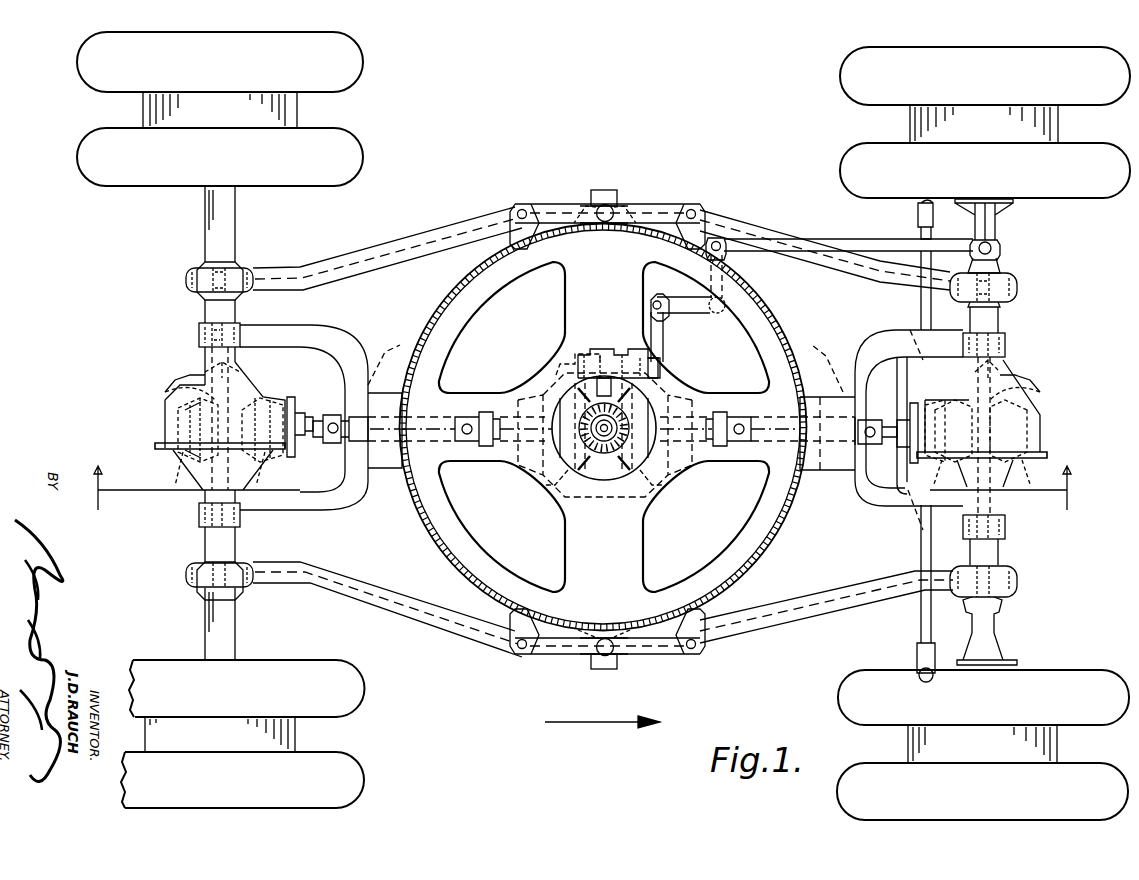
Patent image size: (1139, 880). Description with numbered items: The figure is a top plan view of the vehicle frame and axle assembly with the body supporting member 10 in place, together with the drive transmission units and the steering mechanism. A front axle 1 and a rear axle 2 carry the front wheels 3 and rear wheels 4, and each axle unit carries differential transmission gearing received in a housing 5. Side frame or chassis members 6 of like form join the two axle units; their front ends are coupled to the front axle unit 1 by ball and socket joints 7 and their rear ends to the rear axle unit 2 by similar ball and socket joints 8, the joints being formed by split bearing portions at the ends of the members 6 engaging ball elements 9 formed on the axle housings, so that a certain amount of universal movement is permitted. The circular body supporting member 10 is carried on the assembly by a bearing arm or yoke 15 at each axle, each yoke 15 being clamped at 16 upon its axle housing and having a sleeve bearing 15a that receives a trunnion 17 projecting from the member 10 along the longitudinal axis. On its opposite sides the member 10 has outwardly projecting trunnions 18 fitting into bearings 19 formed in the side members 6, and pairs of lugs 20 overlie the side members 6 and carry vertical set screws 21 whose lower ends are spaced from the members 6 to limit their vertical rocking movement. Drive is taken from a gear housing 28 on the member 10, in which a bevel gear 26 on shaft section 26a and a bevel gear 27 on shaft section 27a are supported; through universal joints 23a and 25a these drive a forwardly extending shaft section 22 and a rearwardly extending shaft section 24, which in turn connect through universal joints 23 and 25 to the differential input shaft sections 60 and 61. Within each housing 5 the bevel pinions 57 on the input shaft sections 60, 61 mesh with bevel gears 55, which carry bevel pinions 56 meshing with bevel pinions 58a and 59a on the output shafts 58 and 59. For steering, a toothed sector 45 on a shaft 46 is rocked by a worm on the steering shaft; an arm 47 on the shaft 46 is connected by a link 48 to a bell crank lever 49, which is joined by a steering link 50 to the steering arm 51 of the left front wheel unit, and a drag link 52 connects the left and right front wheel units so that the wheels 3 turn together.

The front axle 1 is at (998, 316).
The rear axle 2 is at (204, 305).
The front wheels 3 is at (842, 92).
The rear wheels 4 is at (358, 79).
The housing 5 is at (164, 420).
The side frame member 6 is at (380, 236).
The ball and socket joint 7 is at (998, 274).
The ball and socket joint 8 is at (238, 270).
The ball element 9 is at (190, 267).
The body supporting member 10 is at (778, 342).
The bearing arm 15 is at (344, 328).
The sleeve bearing 15a is at (826, 370).
The clamp 16 is at (199, 337).
The trunnion 17 is at (366, 468).
The trunnion 18 is at (611, 190).
The bearing 19 is at (626, 202).
The lug 20 is at (538, 208).
The set screw 21 is at (512, 208).
The shaft section 22 is at (764, 422).
The universal joint 23 is at (876, 422).
The universal joint 23a is at (718, 415).
The shaft section 24 is at (422, 422).
The universal joint 25 is at (326, 442).
The universal joint 25a is at (474, 418).
The bevel gear 26 is at (606, 488).
The shaft section 26a is at (684, 395).
The bevel gear 27 is at (578, 488).
The shaft section 27a is at (495, 465).
The gear housing 28 is at (670, 488).
The toothed sector 45 is at (557, 392).
The shaft 46 is at (618, 350).
The arm 47 is at (664, 360).
The link 48 is at (648, 316).
The bell crank lever 49 is at (726, 270).
The steering link 50 is at (846, 244).
The steering arm 51 is at (996, 226).
The drag link 52 is at (920, 552).
The bevel gear 55 is at (164, 392).
The bevel pinion 56 is at (175, 440).
The bevel pinion 57 is at (275, 402).
The output shaft 58 is at (204, 372).
The bevel pinion 58a is at (1068, 376).
The output shaft 59 is at (184, 477).
The bevel pinion 59a is at (1078, 464).
The input shaft section 60 is at (944, 392).
The input shaft section 61 is at (296, 404).